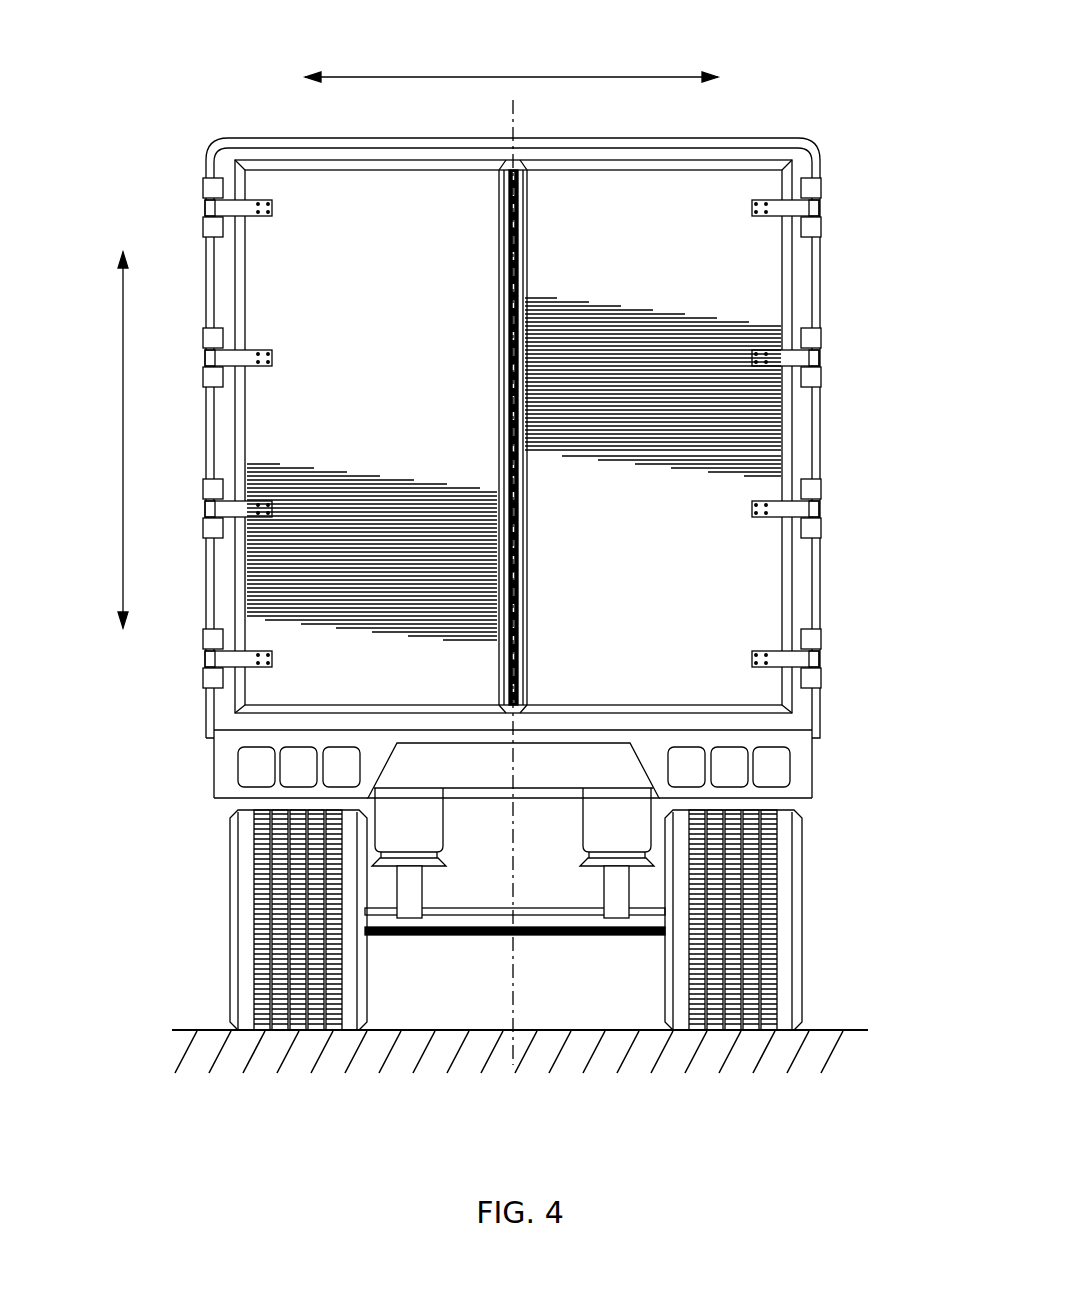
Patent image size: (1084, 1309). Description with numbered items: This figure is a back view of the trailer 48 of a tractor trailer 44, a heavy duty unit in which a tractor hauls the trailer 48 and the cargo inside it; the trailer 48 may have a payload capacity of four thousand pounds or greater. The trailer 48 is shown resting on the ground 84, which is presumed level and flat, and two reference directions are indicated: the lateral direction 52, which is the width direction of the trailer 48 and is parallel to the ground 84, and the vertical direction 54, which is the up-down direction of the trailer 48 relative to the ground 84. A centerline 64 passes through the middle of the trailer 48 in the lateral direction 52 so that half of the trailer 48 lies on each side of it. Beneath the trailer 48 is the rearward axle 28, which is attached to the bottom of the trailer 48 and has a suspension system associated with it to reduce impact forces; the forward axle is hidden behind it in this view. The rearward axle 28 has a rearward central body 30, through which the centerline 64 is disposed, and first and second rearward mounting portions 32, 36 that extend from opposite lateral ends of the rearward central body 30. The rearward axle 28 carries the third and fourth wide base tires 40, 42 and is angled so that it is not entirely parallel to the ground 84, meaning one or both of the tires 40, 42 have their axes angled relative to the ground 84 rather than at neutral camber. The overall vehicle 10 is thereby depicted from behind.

The trailer 10 is at (503, 536).
The rearward axle 28 is at (525, 922).
The rearward central body 30 is at (515, 870).
The first rearward mounting portion 32 is at (380, 922).
The second rearward mounting portion 36 is at (653, 922).
The third wide base tire 40 is at (320, 876).
The fourth wide base tire 42 is at (772, 882).
The tractor trailer 44 is at (478, 429).
The trailer 48 is at (305, 305).
The lateral direction 52 is at (530, 75).
The vertical direction 54 is at (123, 420).
The centerline 64 is at (513, 826).
The ground 84 is at (444, 1015).